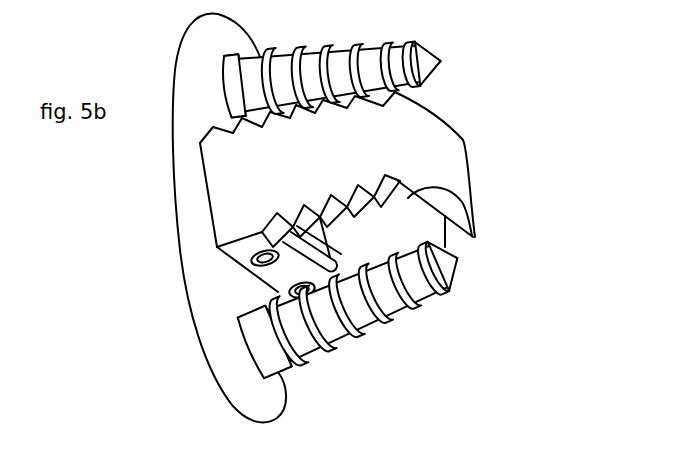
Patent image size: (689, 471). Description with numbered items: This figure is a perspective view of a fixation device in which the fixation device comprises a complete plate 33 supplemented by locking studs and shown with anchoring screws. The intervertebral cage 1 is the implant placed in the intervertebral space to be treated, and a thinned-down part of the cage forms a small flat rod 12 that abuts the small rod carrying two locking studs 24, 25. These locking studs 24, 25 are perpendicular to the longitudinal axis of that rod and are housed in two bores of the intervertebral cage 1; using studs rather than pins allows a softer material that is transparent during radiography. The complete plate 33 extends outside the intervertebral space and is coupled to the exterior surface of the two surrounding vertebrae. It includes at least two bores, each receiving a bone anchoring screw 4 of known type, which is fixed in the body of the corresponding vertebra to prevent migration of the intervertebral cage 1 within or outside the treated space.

The intervertebral cage 1 is at (445, 175).
The bone anchoring screw 4 is at (407, 58).
The small flat rod 12 is at (273, 275).
The locking stud 24 is at (258, 252).
The locking stud 25 is at (262, 296).
The complete plate 33 is at (180, 181).